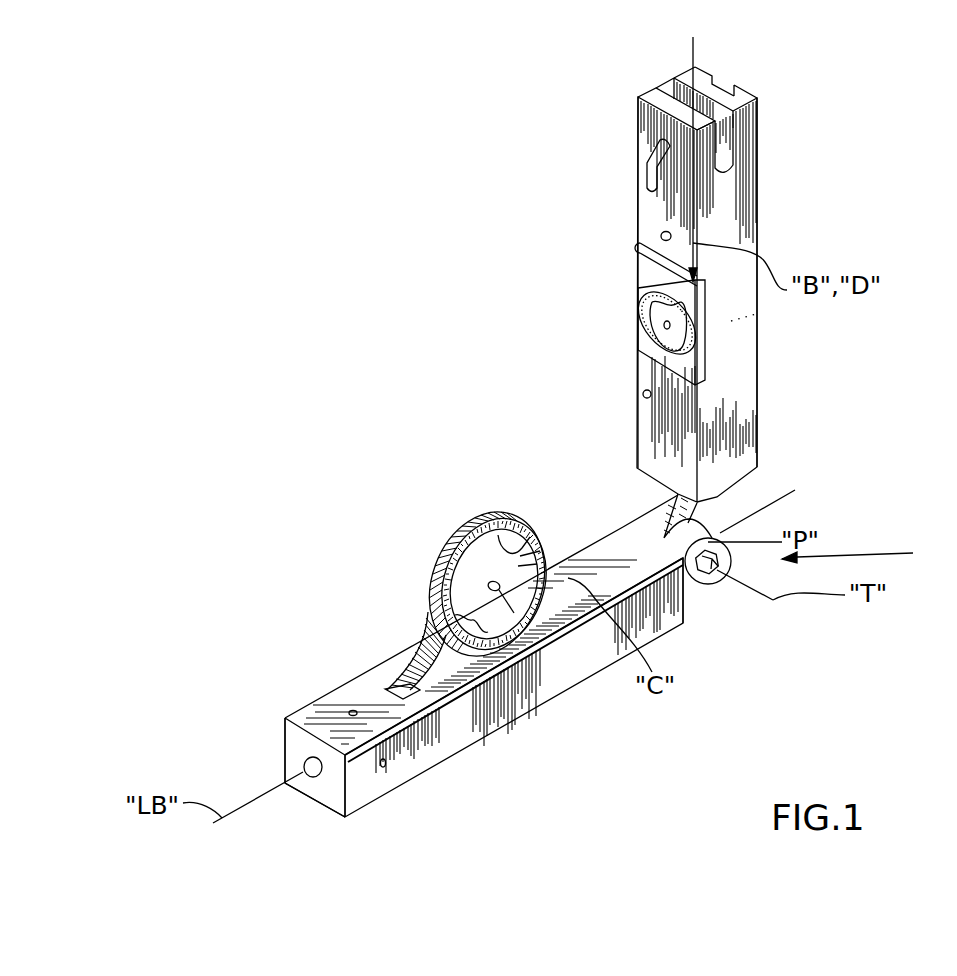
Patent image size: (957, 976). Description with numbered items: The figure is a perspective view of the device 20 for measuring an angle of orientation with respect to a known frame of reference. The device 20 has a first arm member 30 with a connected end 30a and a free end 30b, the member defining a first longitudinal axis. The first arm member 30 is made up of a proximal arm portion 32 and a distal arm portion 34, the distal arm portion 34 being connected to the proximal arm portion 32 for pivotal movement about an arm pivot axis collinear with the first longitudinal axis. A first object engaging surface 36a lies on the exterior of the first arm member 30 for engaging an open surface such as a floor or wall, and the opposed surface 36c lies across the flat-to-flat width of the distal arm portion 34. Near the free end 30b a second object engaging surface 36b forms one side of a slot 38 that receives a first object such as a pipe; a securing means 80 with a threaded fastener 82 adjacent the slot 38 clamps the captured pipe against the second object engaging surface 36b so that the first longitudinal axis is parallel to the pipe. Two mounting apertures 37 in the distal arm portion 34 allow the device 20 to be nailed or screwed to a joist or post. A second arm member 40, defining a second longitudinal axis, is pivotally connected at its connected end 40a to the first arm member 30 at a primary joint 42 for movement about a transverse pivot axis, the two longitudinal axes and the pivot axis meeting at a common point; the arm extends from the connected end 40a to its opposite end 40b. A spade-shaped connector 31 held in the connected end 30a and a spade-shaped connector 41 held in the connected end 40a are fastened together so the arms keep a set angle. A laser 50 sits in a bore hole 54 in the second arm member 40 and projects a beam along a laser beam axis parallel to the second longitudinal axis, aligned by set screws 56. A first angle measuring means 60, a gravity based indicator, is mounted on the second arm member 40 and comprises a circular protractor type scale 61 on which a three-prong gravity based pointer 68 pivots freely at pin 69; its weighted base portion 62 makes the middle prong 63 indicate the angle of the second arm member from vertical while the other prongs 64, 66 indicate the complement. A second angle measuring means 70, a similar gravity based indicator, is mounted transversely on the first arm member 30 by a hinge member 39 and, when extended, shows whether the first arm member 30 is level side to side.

The device 20 is at (398, 320).
The first arm member 30 is at (740, 373).
The connected end of first arm member 30a is at (777, 484).
The free end of first arm member 30b is at (742, 98).
The spade-shaped connector 31 is at (668, 540).
The proximal arm portion 32 is at (708, 525).
The distal arm portion 34 is at (732, 195).
The first object engaging surface 36a is at (760, 227).
The second object engaging surface 36b is at (700, 97).
The opposed surface 36c is at (648, 375).
The mounting apertures 37 is at (661, 236).
The slot 38 is at (668, 90).
The hinge member 39 is at (640, 250).
The second arm member 40 is at (572, 708).
The connected end of second arm member 40a is at (687, 610).
The second end of base member 40b is at (330, 800).
The spade-shaped connector 41 is at (700, 587).
The primary joint 42 is at (866, 555).
The laser 50 is at (300, 763).
The bore hole 54 is at (296, 780).
The set screws 56 is at (353, 712).
The first angle measuring means 60 is at (487, 613).
The circular protractor type scale 61 is at (434, 574).
The weighted base portion 62 is at (493, 615).
The middle prong 63 is at (480, 514).
The prong 64 is at (458, 597).
The prong 66 is at (548, 580).
The three-prong gravity based pointer 68 is at (513, 560).
The pin 69 is at (547, 690).
The second angle measuring means 70 is at (660, 315).
The securing means 80 is at (558, 118).
The threaded fastener 82 is at (650, 163).